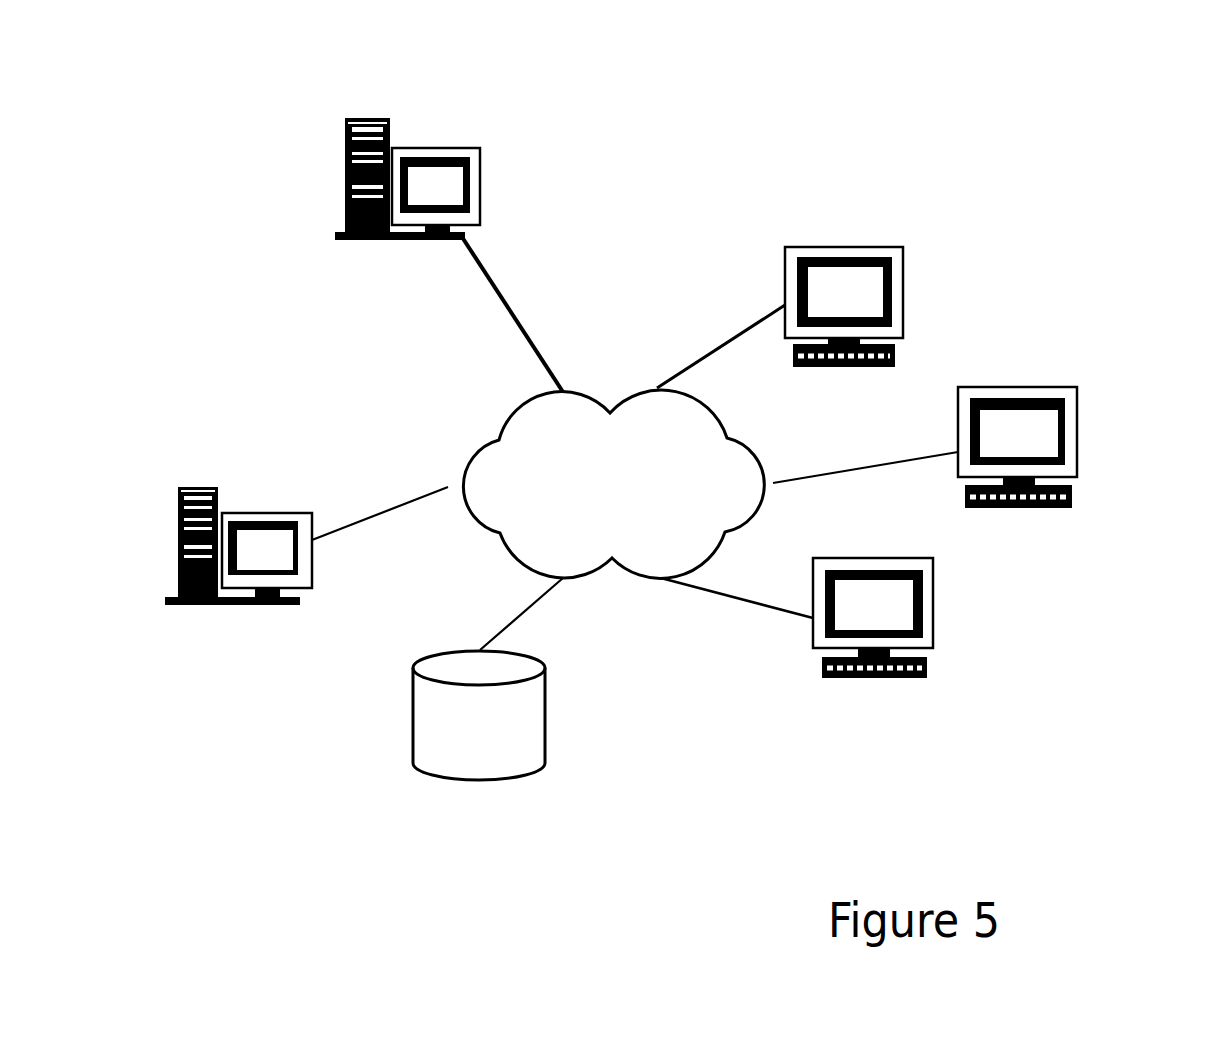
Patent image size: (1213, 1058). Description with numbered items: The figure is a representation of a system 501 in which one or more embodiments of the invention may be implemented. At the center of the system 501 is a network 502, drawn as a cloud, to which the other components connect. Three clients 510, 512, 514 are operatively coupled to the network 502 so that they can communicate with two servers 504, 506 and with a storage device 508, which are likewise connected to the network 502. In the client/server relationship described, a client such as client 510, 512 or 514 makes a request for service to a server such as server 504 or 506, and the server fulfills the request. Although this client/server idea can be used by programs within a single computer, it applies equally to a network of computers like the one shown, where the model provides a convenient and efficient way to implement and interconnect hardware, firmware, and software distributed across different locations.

The system 501 is at (764, 679).
The network 502 is at (613, 484).
The server 504 is at (263, 513).
The server 506 is at (434, 148).
The storage device 508 is at (538, 713).
The client 510 is at (840, 248).
The client 512 is at (1022, 385).
The client 514 is at (933, 617).